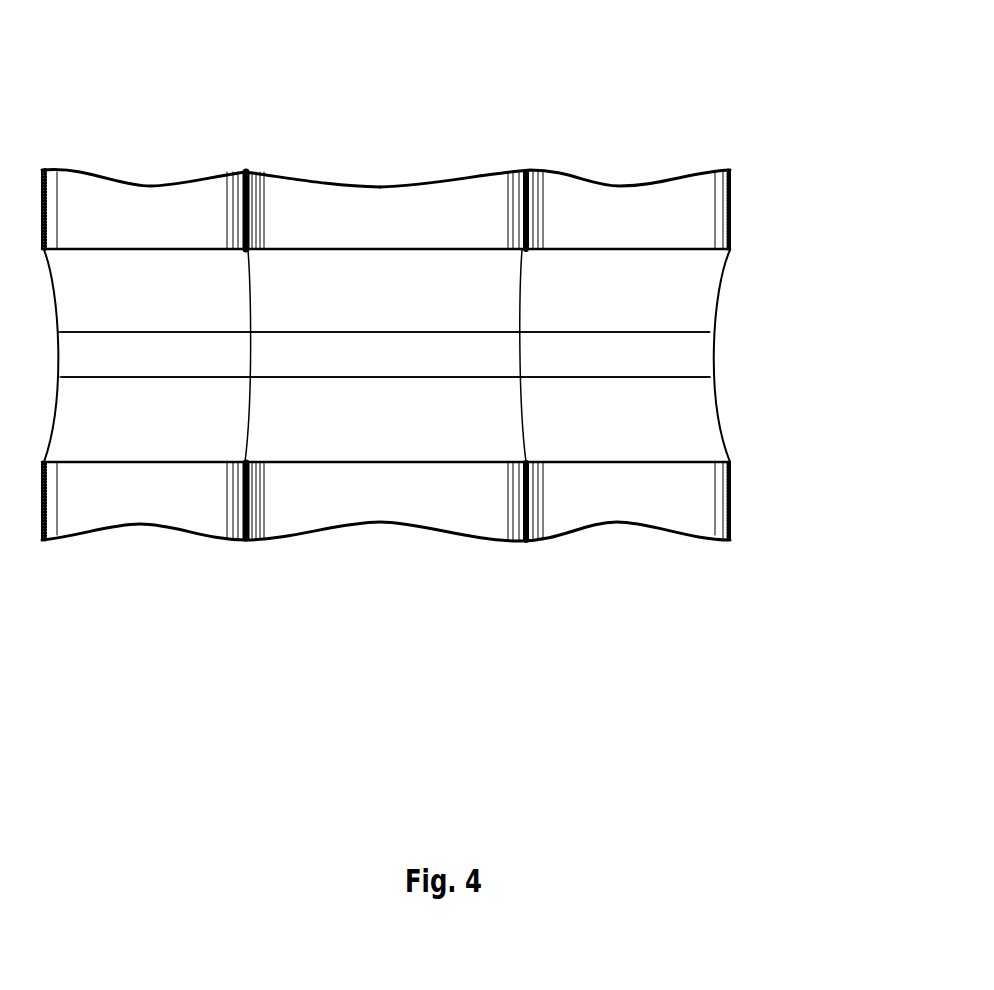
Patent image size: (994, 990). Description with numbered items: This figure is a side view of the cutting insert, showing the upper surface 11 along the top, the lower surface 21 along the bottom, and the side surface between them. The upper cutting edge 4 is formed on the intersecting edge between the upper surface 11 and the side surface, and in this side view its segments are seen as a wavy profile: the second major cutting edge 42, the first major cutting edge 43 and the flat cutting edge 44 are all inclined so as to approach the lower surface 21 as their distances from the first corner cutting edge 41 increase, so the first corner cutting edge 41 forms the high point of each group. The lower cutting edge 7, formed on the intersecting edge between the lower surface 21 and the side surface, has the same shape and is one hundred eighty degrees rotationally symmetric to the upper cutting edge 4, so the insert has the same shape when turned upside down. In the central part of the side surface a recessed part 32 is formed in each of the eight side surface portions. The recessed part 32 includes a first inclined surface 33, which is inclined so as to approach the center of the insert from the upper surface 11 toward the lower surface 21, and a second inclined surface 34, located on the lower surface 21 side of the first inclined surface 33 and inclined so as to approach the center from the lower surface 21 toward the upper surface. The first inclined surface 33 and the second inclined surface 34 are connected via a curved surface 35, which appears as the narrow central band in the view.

The upper surface 11 is at (687, 92).
The upper cutting edge 4 is at (535, 167).
The lower cutting edge 7 is at (177, 535).
The lower surface 21 is at (580, 580).
The recessed part 32 is at (800, 253).
The first inclined surface 33 is at (720, 292).
The second inclined surface 34 is at (722, 428).
The curved surface 35 is at (708, 358).
The first corner cutting edge 41 is at (247, 172).
The second major cutting edge 42 is at (390, 177).
The first major cutting edge 43 is at (290, 172).
The flat cutting edge 44 is at (190, 178).